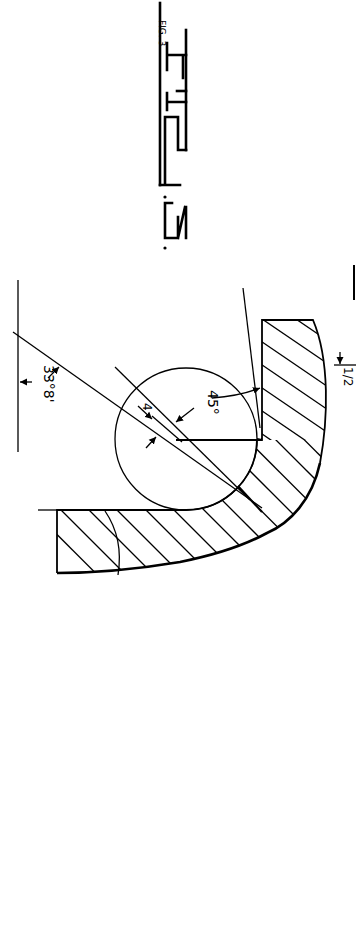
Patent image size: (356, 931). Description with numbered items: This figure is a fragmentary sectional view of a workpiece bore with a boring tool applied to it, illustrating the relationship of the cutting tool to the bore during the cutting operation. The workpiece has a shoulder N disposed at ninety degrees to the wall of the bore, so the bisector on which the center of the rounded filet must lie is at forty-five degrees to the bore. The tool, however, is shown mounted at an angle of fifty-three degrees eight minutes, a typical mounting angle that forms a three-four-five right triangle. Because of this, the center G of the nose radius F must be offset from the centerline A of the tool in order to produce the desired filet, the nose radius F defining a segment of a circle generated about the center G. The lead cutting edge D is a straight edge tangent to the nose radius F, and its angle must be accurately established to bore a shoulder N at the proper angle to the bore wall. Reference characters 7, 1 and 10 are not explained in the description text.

The centerline of the tool A is at (47, 351).
The shoulder N is at (77, 510).
The lead cutting edge D is at (118, 576).
The center of the nose radius G is at (188, 439).
The groove surface 7 is at (210, 503).
The tangent line 1 is at (250, 322).
The upright die wall 10 is at (260, 360).
The nose radius F is at (297, 516).